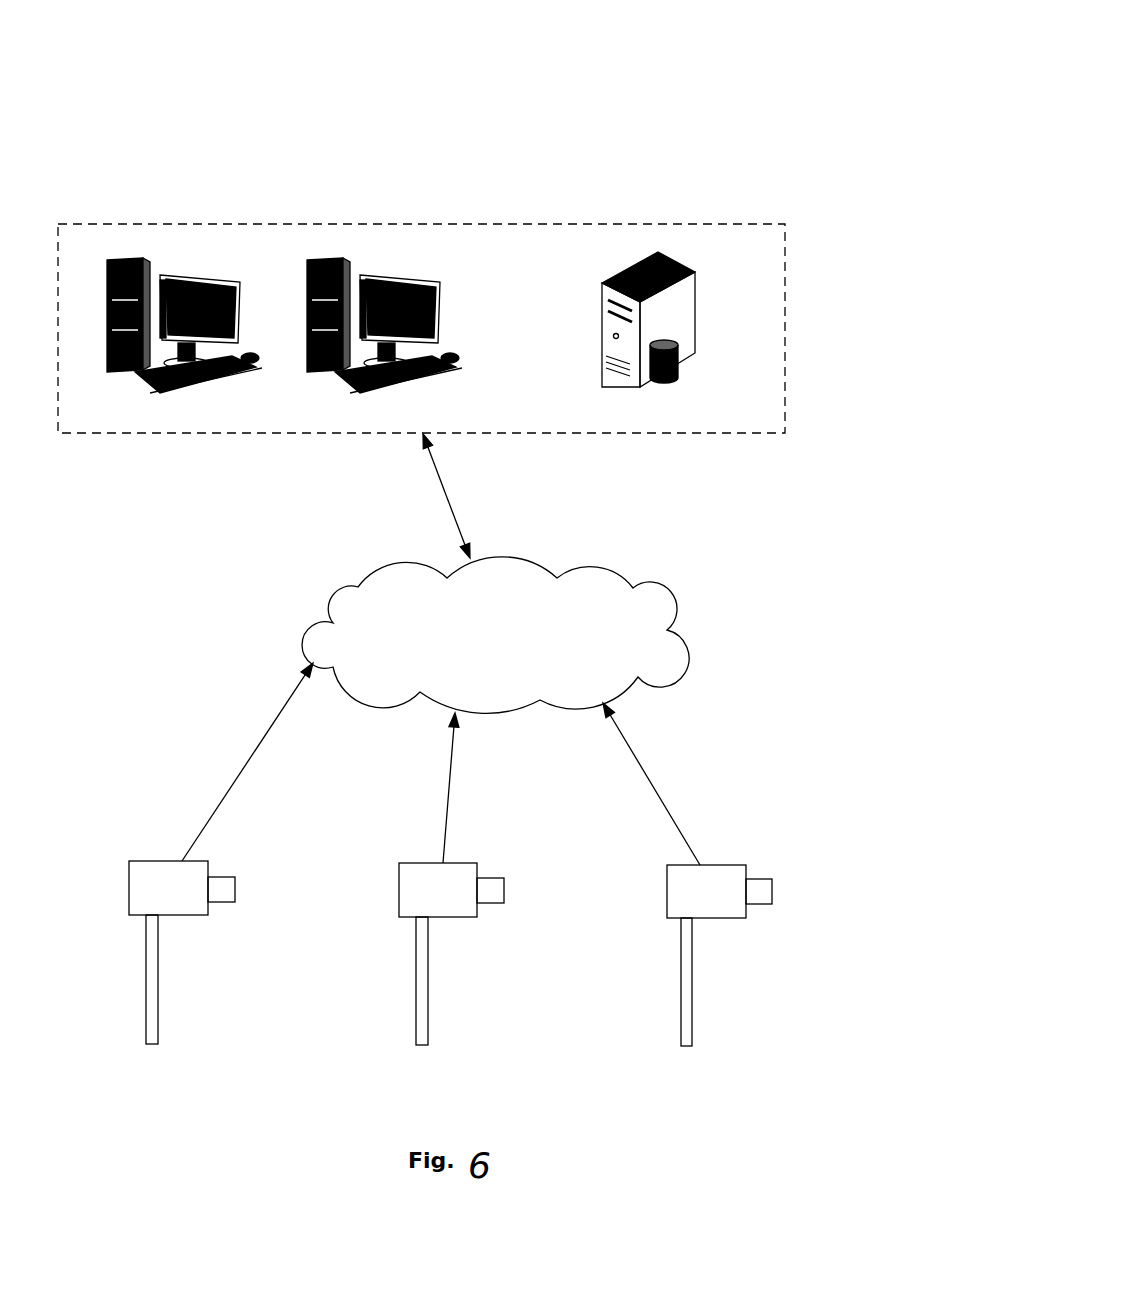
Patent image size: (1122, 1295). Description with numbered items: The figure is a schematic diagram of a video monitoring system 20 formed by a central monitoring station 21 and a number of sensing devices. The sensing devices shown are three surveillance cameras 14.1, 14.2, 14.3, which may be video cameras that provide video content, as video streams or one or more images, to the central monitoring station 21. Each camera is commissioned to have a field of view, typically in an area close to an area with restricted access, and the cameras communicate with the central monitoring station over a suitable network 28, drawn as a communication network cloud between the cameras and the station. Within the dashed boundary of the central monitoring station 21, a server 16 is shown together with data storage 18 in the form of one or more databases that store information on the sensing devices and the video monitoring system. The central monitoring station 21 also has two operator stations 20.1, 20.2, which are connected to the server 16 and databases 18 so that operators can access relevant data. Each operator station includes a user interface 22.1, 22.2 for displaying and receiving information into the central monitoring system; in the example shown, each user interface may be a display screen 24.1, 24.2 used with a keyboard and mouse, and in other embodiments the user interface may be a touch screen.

The monitoring system 20 is at (610, 110).
The central monitoring station 21 is at (479, 322).
The operator station 20.1 is at (197, 316).
The operator station 20.2 is at (350, 322).
The user interface 22.1 is at (226, 302).
The user interface 22.2 is at (427, 302).
The display screen 24.1 is at (183, 406).
The display screen 24.2 is at (322, 391).
The server 16 is at (668, 288).
The data storage 18 is at (705, 380).
The network 28 is at (542, 630).
The surveillance camera 14.1 is at (221, 853).
The surveillance camera 14.2 is at (475, 879).
The surveillance camera 14.3 is at (713, 874).